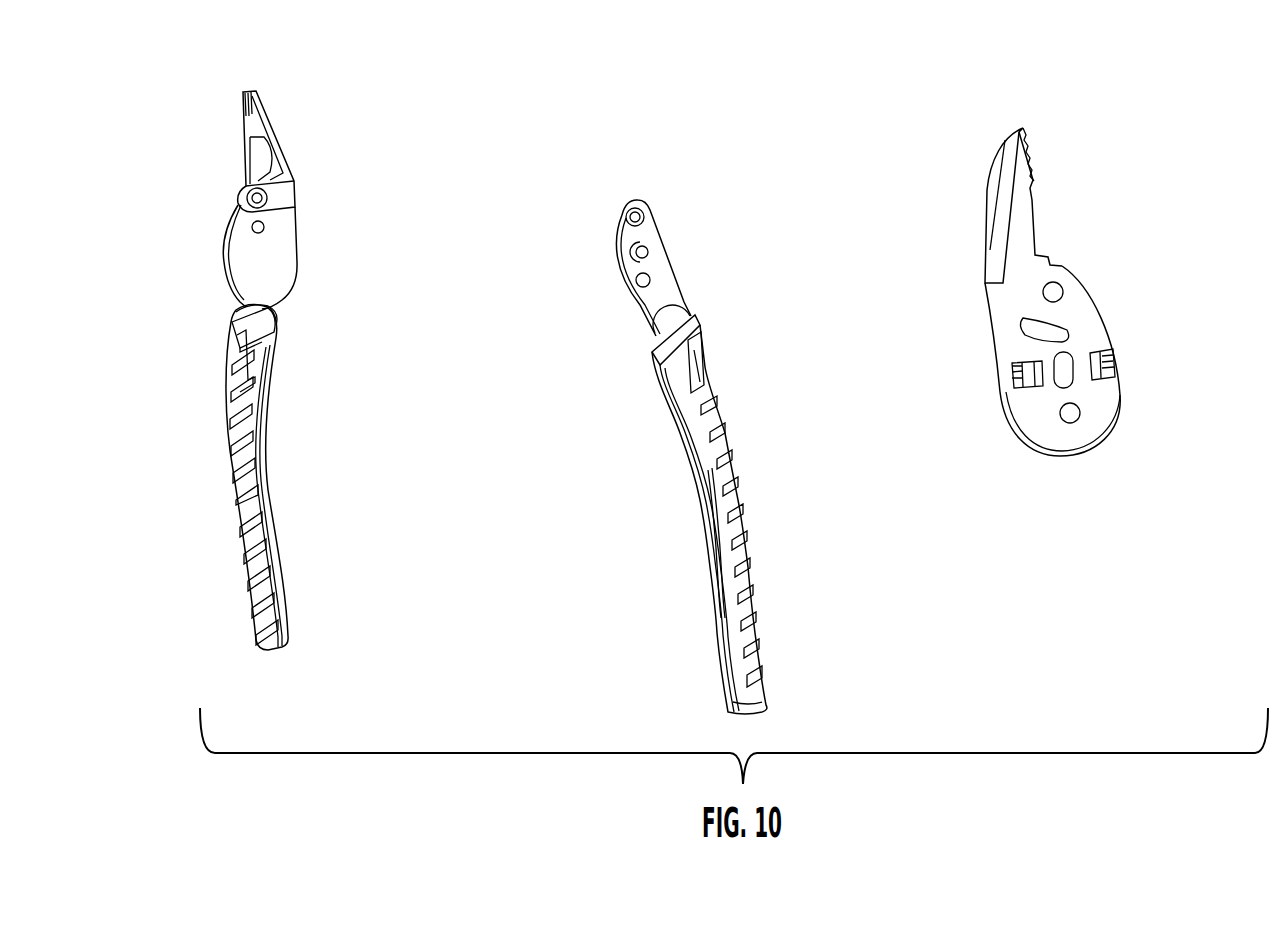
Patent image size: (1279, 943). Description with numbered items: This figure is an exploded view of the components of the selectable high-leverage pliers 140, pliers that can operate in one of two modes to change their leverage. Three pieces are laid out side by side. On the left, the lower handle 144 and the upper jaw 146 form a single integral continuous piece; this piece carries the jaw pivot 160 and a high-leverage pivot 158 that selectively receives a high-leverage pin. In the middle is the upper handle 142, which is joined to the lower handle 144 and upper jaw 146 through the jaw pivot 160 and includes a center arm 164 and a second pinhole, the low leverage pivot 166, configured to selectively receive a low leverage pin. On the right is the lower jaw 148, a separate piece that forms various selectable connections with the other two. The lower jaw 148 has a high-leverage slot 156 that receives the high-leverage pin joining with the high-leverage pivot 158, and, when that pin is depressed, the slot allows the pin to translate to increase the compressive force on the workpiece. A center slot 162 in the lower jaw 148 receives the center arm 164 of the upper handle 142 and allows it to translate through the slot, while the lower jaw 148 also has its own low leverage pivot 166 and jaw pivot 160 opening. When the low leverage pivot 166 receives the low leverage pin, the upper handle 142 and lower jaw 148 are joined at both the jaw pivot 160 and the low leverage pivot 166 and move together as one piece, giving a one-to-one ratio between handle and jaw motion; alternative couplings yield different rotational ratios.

The selectable high-leverage pliers 140 is at (690, 88).
The upper handle 142 is at (752, 588).
The lower handle 144 is at (248, 570).
The upper jaw 146 is at (270, 118).
The lower jaw 148 is at (988, 193).
The high-leverage slot 156 is at (1030, 325).
The high-leverage pivot 158 is at (262, 228).
The jaw pivot 160 is at (256, 198).
The center slot 162 is at (1064, 372).
The center arm 164 is at (650, 252).
The low leverage pivot 166 is at (650, 280).